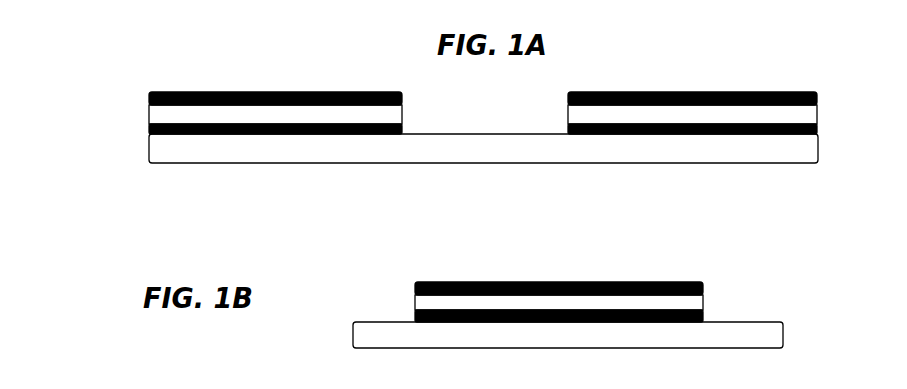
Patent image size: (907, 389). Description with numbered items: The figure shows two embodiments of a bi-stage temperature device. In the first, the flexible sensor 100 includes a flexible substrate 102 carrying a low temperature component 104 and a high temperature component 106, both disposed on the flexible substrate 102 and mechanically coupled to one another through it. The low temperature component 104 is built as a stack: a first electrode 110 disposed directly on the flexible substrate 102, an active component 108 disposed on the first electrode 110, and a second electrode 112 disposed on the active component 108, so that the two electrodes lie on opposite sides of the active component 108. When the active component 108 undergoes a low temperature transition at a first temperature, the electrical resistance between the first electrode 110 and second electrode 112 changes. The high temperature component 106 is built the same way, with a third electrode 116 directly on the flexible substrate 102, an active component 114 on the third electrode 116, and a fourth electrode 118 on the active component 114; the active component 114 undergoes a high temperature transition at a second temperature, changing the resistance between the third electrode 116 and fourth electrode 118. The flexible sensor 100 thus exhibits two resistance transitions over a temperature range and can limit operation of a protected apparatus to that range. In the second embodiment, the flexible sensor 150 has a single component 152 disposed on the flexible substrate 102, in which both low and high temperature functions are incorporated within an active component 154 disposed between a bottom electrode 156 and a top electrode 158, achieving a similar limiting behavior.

In FIG. 1A, the flexible sensor 100 is at (284, 52).
In FIG. 1A, the flexible substrate 102 is at (505, 134).
In FIG. 1B, the flexible substrate 102 is at (710, 322).
In FIG. 1A, the low temperature component 104 is at (237, 98).
In FIG. 1A, the high temperature component 106 is at (727, 95).
In FIG. 1A, the active component 108 is at (149, 111).
In FIG. 1A, the first electrode 110 is at (149, 133).
In FIG. 1A, the second electrode 112 is at (149, 94).
In FIG. 1A, the active component 114 is at (817, 113).
In FIG. 1A, the third electrode 116 is at (817, 129).
In FIG. 1A, the fourth electrode 118 is at (813, 93).
In FIG. 1B, the flexible sensor 150 is at (308, 267).
In FIG. 1B, the component 152 is at (521, 278).
In FIG. 1B, the active component 154 is at (415, 302).
In FIG. 1B, the bottom electrode 156 is at (415, 316).
In FIG. 1B, the top electrode 158 is at (415, 289).